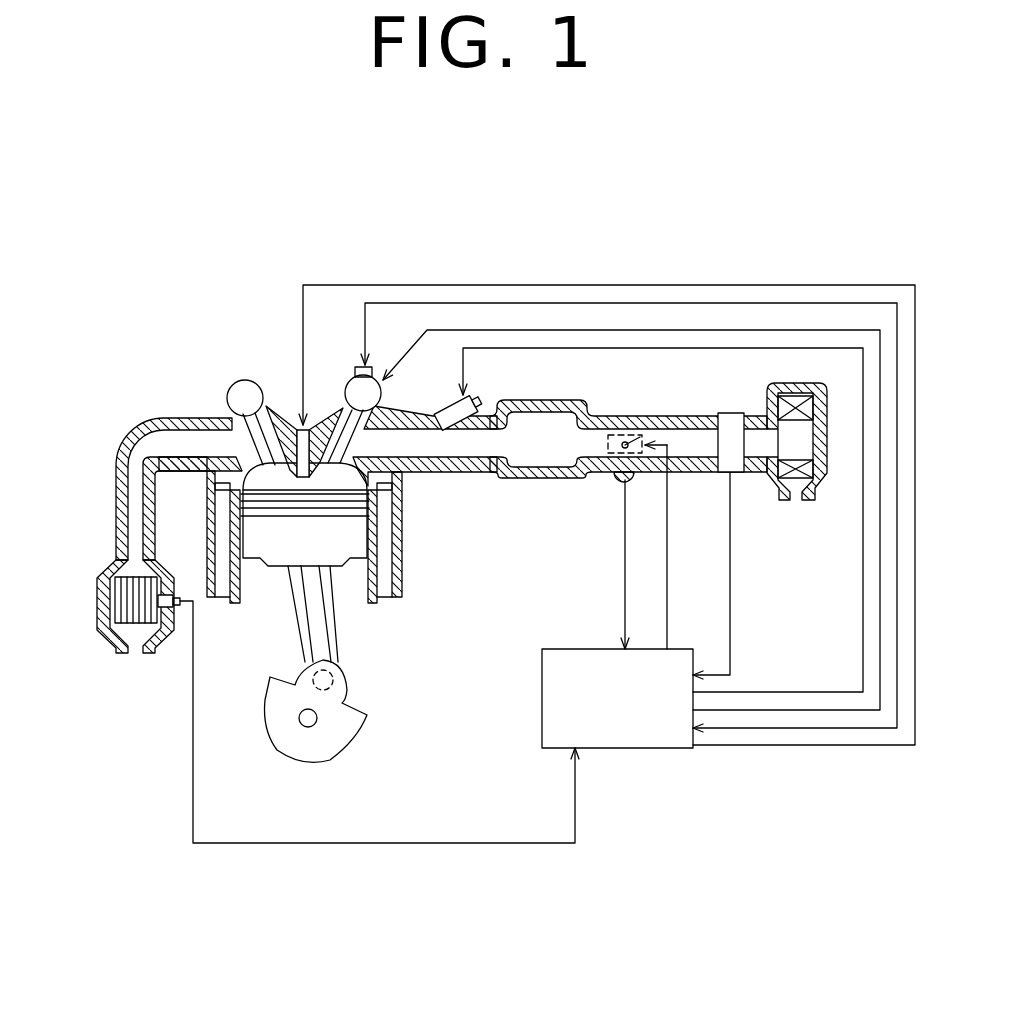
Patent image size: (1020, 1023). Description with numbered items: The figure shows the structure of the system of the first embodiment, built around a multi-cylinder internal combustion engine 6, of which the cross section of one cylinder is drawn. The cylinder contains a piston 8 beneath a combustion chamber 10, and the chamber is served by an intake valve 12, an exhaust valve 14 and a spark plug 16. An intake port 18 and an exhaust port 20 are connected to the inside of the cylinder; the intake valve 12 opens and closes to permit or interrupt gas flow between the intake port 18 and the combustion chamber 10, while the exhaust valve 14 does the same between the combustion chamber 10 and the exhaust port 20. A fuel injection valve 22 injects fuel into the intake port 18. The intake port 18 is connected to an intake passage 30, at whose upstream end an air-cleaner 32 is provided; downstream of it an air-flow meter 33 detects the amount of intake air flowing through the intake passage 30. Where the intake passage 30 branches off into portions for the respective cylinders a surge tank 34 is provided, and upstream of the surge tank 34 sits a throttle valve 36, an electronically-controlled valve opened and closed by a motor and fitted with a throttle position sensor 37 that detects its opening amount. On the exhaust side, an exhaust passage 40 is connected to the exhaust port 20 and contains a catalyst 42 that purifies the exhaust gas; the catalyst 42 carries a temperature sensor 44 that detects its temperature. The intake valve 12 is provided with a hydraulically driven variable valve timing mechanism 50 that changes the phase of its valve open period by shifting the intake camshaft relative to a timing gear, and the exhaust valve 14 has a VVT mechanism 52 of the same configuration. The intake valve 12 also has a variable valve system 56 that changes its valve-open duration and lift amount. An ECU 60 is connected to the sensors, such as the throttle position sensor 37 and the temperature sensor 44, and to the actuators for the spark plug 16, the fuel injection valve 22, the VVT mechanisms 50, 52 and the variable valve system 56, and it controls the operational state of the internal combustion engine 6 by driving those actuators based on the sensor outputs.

The internal combustion engine 6 is at (403, 573).
The piston 8 is at (257, 552).
The combustion chamber 10 is at (310, 485).
The intake valve 12 is at (362, 450).
The exhaust valve 14 is at (257, 450).
The spark plug 16 is at (301, 480).
The intake port 18 is at (412, 455).
The exhaust port 20 is at (213, 447).
The fuel injection valve 22 is at (454, 406).
The intake passage 30 is at (657, 417).
The air-cleaner 32 is at (790, 386).
The air-flow meter 33 is at (730, 423).
The surge tank 34 is at (543, 407).
The throttle valve 36 is at (625, 441).
The throttle position sensor 37 is at (621, 482).
The exhaust passage 40 is at (123, 460).
The catalyst 42 is at (118, 598).
The temperature sensor 44 is at (172, 590).
The variable valve timing mechanism 50 is at (357, 395).
The VVT mechanism 52 is at (252, 396).
The variable valve system 56 is at (362, 363).
The ECU 60 is at (553, 750).